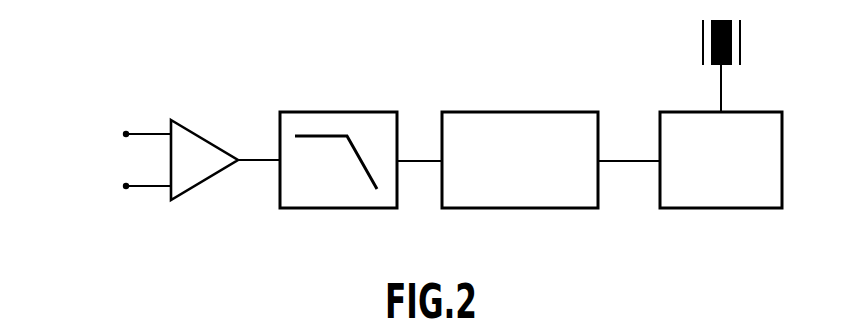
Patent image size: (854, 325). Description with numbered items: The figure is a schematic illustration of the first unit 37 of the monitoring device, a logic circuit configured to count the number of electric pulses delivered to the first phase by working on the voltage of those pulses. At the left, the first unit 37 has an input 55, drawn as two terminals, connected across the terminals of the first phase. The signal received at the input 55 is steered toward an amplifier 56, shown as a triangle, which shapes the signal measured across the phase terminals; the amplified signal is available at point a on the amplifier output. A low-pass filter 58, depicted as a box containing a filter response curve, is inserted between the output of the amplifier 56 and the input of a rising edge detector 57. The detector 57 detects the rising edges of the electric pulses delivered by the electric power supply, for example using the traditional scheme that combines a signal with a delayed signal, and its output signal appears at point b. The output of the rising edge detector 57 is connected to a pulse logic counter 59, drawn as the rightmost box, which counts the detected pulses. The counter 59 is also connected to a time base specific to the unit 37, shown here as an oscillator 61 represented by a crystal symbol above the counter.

The first unit 37 is at (80, 115).
The input 55 is at (110, 116).
The amplifier 56 is at (200, 135).
The rising edge detector 57 is at (515, 112).
The low-pass filter 58 is at (330, 208).
The pulse logic counter 59 is at (783, 147).
The oscillator 61 is at (703, 40).
The point a is at (255, 163).
The point b is at (634, 162).